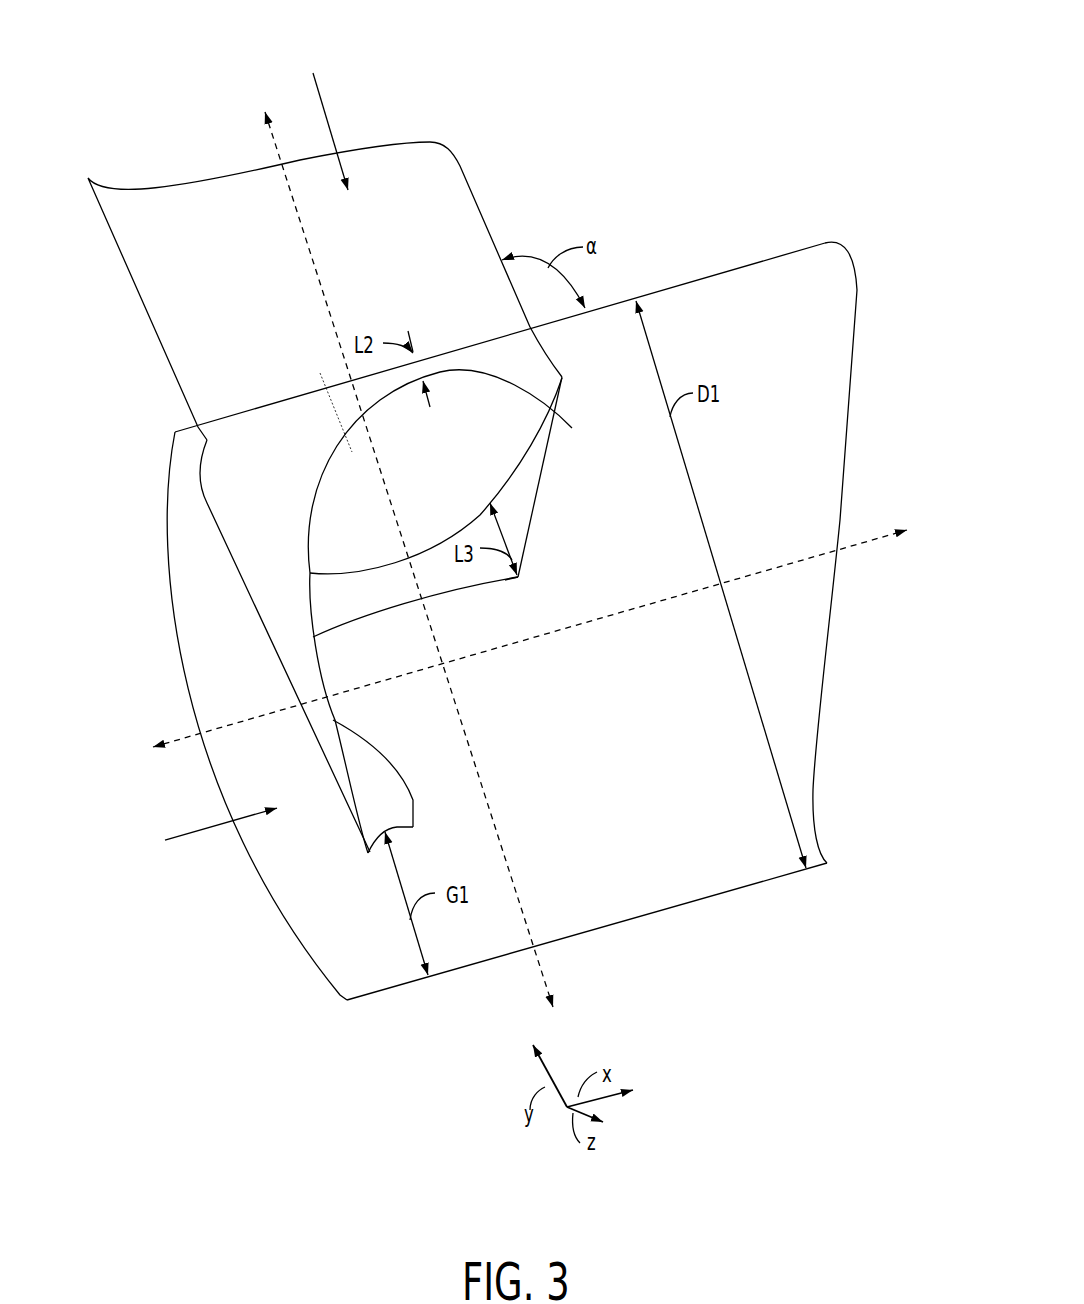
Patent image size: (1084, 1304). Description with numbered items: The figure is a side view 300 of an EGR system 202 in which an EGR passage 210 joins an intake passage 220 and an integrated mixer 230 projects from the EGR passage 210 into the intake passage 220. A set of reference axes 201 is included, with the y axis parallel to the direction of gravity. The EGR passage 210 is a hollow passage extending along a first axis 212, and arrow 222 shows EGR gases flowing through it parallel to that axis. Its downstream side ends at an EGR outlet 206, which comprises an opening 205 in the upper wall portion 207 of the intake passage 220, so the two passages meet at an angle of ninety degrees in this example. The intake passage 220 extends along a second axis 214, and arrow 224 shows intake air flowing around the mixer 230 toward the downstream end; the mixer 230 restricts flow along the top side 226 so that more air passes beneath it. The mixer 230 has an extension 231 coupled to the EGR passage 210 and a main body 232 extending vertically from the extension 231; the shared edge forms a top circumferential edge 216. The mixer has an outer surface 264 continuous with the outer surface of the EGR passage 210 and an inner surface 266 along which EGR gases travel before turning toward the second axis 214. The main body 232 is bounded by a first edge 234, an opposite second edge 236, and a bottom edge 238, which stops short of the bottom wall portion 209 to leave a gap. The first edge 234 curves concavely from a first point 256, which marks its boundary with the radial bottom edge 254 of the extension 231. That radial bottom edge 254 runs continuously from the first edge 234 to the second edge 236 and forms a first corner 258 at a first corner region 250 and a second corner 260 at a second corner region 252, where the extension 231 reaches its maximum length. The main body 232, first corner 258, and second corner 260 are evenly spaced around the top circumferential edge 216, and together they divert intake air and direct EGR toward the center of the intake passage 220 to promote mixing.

The side view 300 is at (815, 37).
The EGR system 202 is at (645, 123).
The arrow 222 is at (332, 123).
The first axis 212 is at (277, 157).
The EGR passage 210 is at (477, 207).
The upper wall portion 207 is at (732, 265).
The top side 226 is at (640, 263).
The intake passage 220 is at (853, 290).
The EGR outlet 206 is at (305, 353).
The opening 205 is at (297, 389).
The mixer 230 is at (237, 427).
The top circumferential edge 216 is at (440, 352).
The first corner region 250 is at (533, 348).
The extension 231 is at (553, 407).
The first corner 258 is at (563, 426).
The radial bottom edge 254 is at (512, 397).
The first point 256 is at (357, 433).
The second corner region 252 is at (472, 487).
The outer surface 264 is at (315, 453).
The inner surface 266 is at (354, 609).
The second corner 260 is at (518, 580).
The main body 232 is at (270, 613).
The first edge 234 is at (322, 670).
The second edge 236 is at (363, 737).
The bottom edge 238 is at (397, 833).
The second axis 214 is at (857, 537).
The bottom wall portion 209 is at (610, 923).
The reference axes 201 is at (583, 1040).
The arrow 224 is at (188, 833).